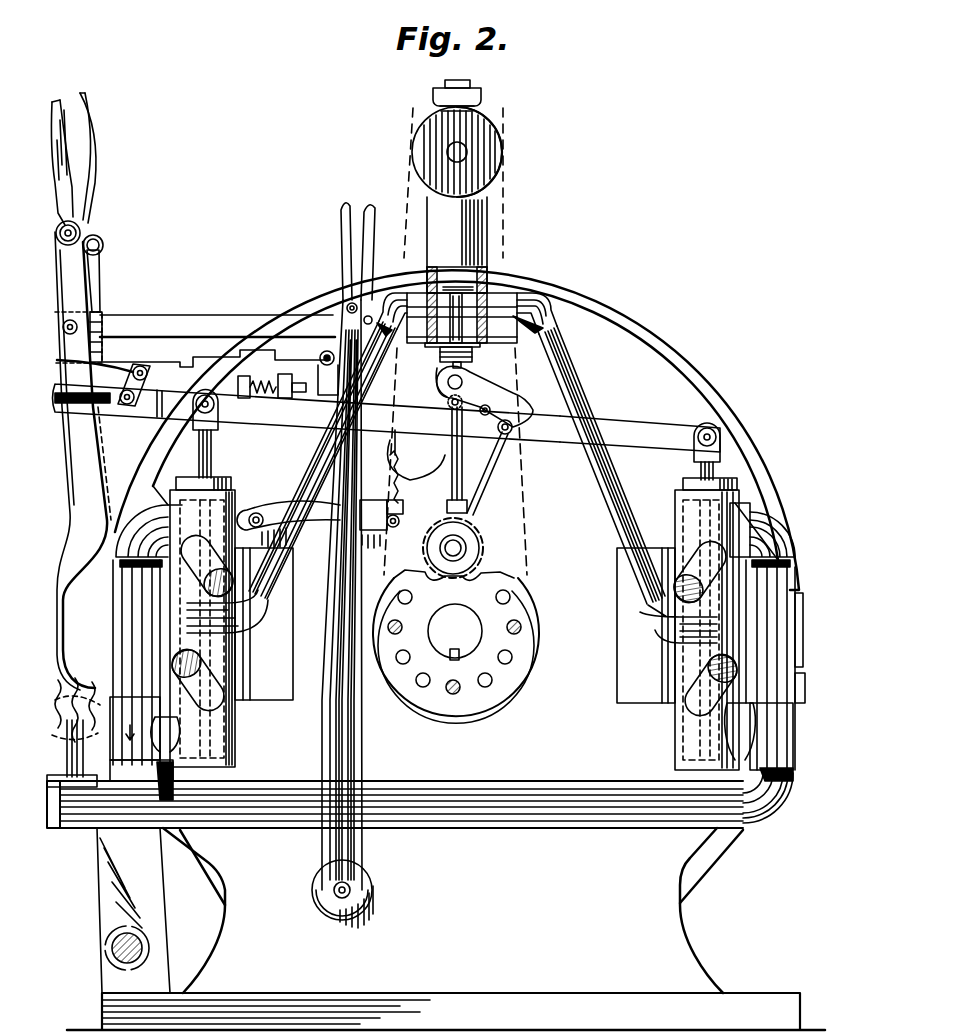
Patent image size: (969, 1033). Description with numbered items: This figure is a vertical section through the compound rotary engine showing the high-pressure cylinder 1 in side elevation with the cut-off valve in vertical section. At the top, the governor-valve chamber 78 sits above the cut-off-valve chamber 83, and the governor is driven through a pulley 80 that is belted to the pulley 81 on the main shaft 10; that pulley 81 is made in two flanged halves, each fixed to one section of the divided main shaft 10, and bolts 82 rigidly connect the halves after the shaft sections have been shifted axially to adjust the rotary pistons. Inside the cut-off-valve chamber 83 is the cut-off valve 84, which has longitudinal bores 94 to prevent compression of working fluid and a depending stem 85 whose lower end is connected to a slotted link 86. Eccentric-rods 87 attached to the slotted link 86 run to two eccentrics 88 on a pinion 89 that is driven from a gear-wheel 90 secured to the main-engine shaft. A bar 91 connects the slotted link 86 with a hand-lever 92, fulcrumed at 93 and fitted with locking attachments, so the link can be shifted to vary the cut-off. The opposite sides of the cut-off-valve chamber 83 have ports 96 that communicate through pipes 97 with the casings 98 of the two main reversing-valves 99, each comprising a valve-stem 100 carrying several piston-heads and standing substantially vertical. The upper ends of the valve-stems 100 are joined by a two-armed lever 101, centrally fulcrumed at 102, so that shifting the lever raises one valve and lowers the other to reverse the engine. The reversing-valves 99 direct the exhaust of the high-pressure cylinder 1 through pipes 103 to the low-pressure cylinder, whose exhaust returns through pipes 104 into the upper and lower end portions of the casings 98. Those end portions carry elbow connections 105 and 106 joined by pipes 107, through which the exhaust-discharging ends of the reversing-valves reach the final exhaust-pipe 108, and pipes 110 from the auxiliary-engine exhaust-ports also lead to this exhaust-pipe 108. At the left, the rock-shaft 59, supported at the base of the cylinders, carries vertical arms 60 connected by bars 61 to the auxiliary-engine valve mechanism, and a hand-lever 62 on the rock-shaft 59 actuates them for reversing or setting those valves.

The high-pressure cylinder 1 is at (446, 929).
The main shaft 10 is at (455, 632).
The rock-shaft 59 is at (150, 948).
The vertical arms 60 is at (108, 546).
The bars 61 is at (163, 327).
The hand-lever 62 is at (95, 485).
The governor-valve chamber 78 is at (480, 242).
The pulley 80 is at (457, 138).
The pulley 81 is at (465, 655).
The bolts 82 is at (454, 695).
The cut-off-valve chamber 83 is at (478, 280).
The cut-off valve 84 is at (478, 350).
The stem 85 is at (441, 379).
The slotted link 86 is at (513, 392).
The eccentric-rods 87 is at (490, 456).
The eccentrics 88 is at (455, 506).
The pinion 89 is at (427, 551).
The gear-wheel 90 is at (433, 582).
The bar 91 is at (385, 407).
The hand-lever 92 is at (346, 546).
The fulcrum 93 is at (334, 891).
The longitudinal bores 94 is at (457, 280).
The ports 96 is at (427, 277).
The pipes 97 is at (548, 350).
The reversing-valve casings 98 is at (226, 648).
The reversing-valves 99 is at (219, 520).
The valve-stem 100 is at (210, 451).
The two-armed lever 101 is at (640, 434).
The fulcrum 102 is at (393, 441).
The pipes 103 is at (230, 684).
The pipes 104 is at (227, 554).
The elbow connection 105 is at (172, 528).
The elbow connection 106 is at (800, 745).
The pipes 107 is at (803, 636).
The final exhaust-pipe 108 is at (395, 801).
The pipes 110 is at (70, 668).